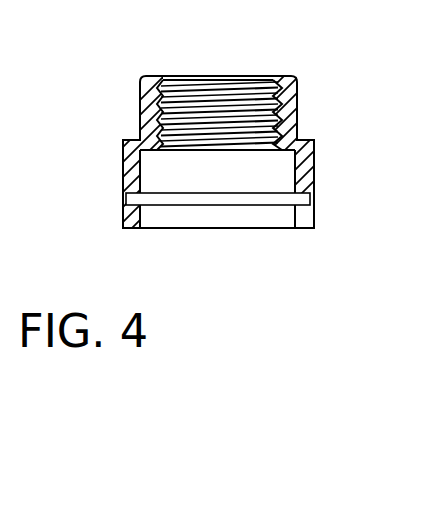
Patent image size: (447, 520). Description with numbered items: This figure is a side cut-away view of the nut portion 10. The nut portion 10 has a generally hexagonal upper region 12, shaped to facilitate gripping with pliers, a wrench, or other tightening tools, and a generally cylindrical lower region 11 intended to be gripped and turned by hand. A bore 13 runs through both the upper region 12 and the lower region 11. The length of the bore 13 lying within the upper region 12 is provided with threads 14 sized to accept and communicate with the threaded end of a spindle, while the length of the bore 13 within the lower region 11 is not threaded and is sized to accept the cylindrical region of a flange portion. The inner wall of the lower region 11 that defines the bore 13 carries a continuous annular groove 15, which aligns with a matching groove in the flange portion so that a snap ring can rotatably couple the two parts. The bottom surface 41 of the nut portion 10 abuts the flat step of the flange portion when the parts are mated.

The nut portion 10 is at (116, 70).
The lower region 11 is at (317, 152).
The upper region 12 is at (300, 107).
The bore 13 is at (197, 219).
The threads 14 is at (181, 105).
The annular groove 15 is at (284, 198).
The bottom surface 41 is at (132, 228).